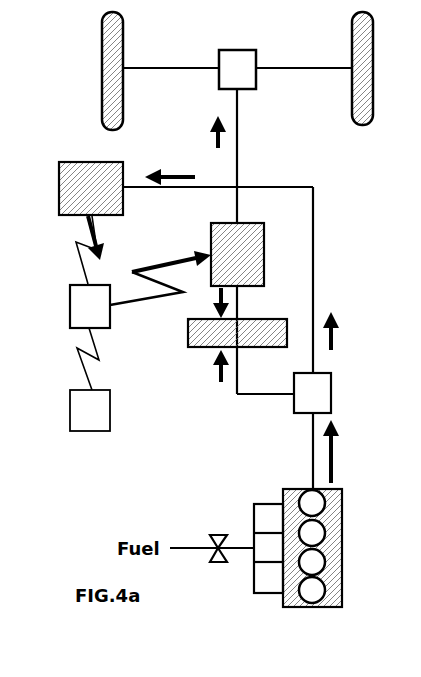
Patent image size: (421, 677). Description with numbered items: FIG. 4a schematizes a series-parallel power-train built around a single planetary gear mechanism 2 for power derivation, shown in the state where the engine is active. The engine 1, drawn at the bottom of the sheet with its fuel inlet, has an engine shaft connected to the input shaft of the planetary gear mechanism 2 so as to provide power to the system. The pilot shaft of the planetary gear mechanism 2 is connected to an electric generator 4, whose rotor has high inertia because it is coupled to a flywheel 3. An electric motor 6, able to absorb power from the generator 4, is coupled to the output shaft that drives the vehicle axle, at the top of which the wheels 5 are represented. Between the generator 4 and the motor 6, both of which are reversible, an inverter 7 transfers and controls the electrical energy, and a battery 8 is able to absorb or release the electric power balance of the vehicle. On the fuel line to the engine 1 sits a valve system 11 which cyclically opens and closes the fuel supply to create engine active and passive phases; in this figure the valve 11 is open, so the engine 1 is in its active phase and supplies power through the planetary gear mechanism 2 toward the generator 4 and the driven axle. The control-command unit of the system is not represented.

The engine 1 is at (342, 544).
The planetary gear mechanism 2 is at (331, 400).
The flywheel 3 is at (287, 325).
The electric generator 4 is at (264, 258).
The wheel 5 is at (365, 126).
The electric motor 6 is at (62, 217).
The inverter 7 is at (69, 317).
The battery 8 is at (70, 412).
The valve system 11 is at (219, 564).